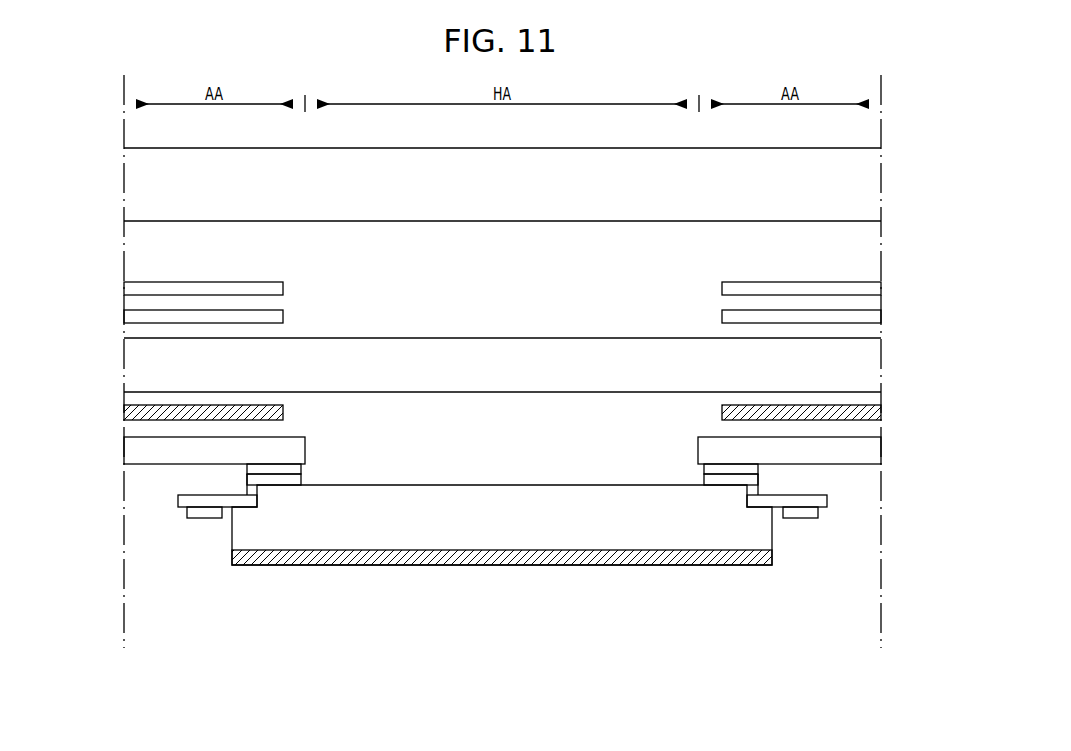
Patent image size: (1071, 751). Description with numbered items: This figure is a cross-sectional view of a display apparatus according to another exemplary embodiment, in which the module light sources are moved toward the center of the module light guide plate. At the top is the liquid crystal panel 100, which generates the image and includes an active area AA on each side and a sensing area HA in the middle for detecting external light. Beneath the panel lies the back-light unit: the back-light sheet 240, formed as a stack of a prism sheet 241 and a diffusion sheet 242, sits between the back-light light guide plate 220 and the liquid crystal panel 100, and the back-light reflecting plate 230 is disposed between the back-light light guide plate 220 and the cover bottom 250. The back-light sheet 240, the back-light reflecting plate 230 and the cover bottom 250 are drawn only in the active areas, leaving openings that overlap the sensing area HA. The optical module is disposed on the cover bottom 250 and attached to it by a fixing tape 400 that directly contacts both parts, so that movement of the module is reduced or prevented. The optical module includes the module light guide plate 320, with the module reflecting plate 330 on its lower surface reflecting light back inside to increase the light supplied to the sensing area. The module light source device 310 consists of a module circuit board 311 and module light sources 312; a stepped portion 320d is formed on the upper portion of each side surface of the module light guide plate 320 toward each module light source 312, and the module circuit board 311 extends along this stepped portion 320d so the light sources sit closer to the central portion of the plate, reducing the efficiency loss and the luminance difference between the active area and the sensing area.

The liquid crystal panel 100 is at (870, 182).
The back-light light guide plate 220 is at (870, 358).
The back-light reflecting plate 230 is at (870, 413).
The back-light sheet 240 is at (542, 303).
The prism sheet 241 is at (870, 318).
The diffusion sheet 242 is at (870, 289).
The cover bottom 250 is at (870, 452).
The module light source device 310 is at (435, 509).
The module circuit board 311 is at (183, 501).
The module light sources 312 is at (190, 512).
The module light guide plate 320 is at (581, 538).
The stepped portion 320d is at (251, 510).
The module reflecting plate 330 is at (652, 555).
The fixing tape 400 is at (758, 468).